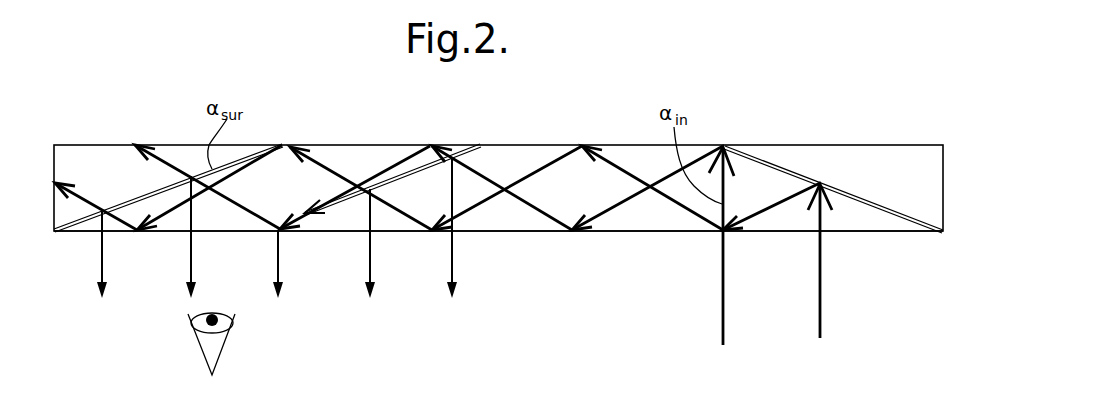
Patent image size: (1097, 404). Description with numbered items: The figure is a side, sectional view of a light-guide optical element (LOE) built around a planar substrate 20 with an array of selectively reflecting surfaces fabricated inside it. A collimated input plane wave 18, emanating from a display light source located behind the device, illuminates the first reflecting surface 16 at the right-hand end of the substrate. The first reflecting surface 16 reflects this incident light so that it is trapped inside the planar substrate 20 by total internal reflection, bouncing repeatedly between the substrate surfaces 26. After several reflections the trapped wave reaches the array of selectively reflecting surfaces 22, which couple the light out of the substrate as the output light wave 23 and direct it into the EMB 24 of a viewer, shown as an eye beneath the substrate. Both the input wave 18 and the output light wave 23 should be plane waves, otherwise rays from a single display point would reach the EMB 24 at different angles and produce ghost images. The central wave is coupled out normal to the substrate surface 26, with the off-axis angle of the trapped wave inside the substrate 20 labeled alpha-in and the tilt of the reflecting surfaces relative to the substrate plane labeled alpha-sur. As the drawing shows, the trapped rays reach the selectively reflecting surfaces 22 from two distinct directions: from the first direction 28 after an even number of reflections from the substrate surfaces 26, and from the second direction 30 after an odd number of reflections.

The first reflecting surface 16 is at (880, 203).
The collimated input plane wave 18 is at (820, 277).
The planar substrate 20 is at (837, 166).
The array of selectively reflecting surfaces 22 is at (132, 190).
The output light wave 23 is at (278, 255).
The EMB of a viewer 24 is at (228, 344).
The substrate surface 26 is at (488, 232).
The first direction 28 is at (581, 146).
The second direction 30 is at (689, 232).